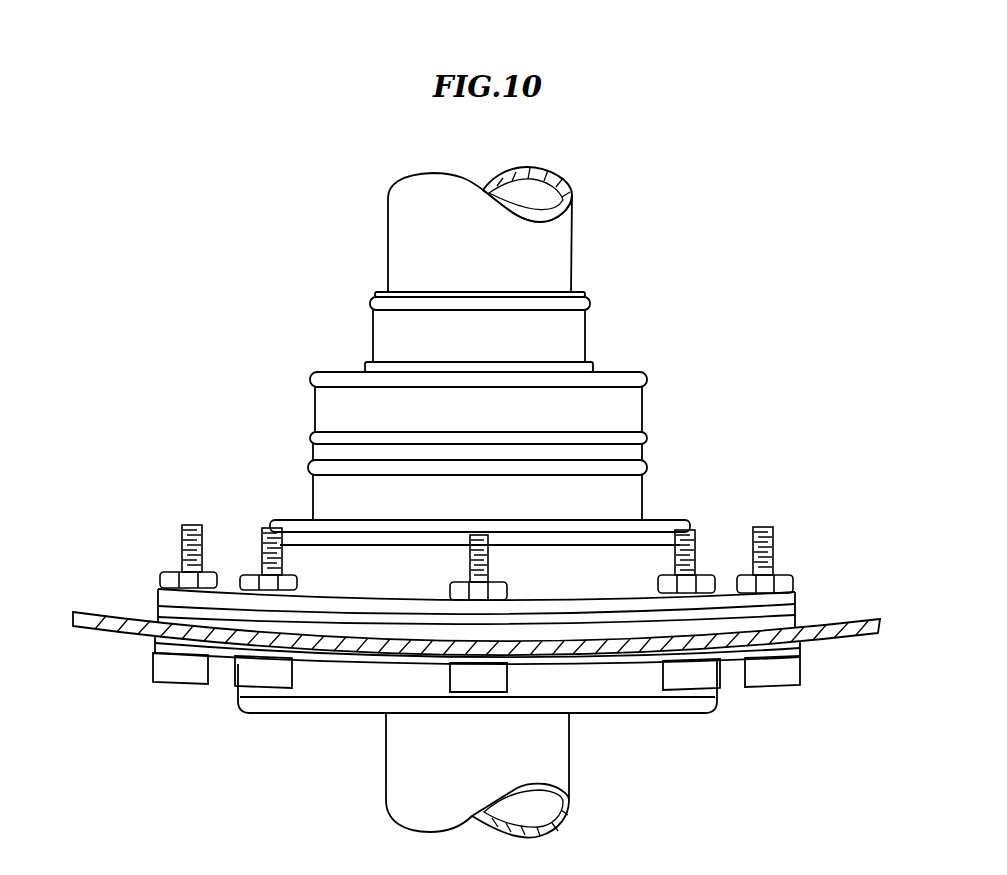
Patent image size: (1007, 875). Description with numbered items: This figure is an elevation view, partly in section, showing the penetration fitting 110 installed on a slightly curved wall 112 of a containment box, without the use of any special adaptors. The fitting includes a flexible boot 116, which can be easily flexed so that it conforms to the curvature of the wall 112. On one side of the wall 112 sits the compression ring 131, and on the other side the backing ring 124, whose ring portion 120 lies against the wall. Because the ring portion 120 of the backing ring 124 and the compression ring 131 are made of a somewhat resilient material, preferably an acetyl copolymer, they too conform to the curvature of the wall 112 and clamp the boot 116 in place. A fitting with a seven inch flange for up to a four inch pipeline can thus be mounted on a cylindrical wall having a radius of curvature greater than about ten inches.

The penetration fitting 110 is at (288, 392).
The flexible boot 116 is at (645, 495).
The compression ring 131 is at (797, 598).
The curved wall 112 is at (857, 620).
The ring portion 120 is at (798, 647).
The backing ring 124 is at (777, 685).